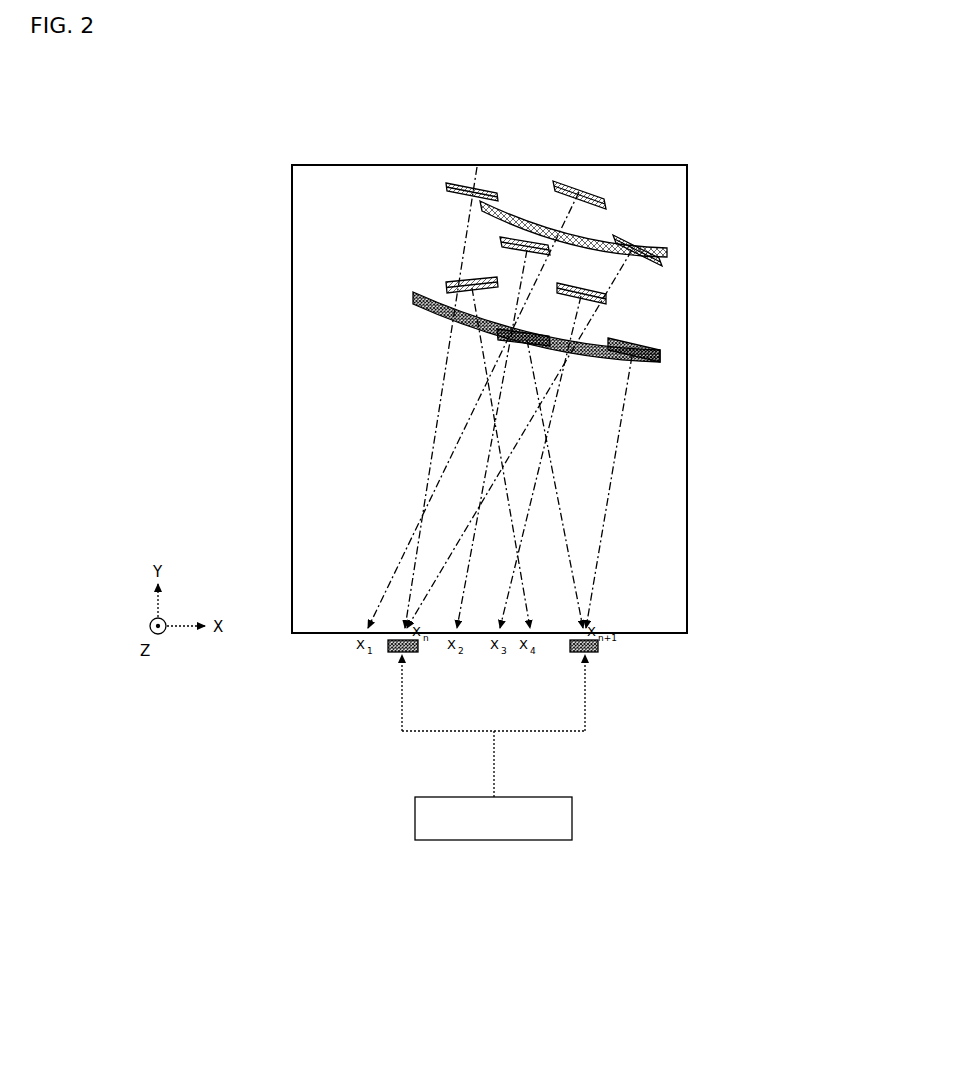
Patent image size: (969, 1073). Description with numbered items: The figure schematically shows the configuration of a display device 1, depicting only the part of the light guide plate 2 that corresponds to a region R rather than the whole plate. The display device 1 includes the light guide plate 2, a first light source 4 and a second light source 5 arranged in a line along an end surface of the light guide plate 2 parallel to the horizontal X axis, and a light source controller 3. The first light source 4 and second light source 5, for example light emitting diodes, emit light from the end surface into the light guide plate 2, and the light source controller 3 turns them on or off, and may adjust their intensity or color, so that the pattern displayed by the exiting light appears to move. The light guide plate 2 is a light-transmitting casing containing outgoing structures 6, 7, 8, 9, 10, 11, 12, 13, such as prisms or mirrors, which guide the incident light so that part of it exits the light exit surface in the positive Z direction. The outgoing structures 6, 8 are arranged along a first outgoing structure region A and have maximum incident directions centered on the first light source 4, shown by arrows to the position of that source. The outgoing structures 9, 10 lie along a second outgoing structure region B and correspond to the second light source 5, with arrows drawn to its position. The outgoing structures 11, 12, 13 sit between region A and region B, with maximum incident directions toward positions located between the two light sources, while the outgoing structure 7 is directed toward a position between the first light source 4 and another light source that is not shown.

The display device 1 is at (256, 137).
The light guide plate 2 is at (687, 303).
The light source controller 3 is at (523, 841).
The first light source 4 is at (412, 654).
The second light source 5 is at (576, 654).
The outgoing structure 6 is at (482, 185).
The outgoing structure 7 is at (572, 190).
The outgoing structure 8 is at (617, 233).
The outgoing structure 9 is at (535, 328).
The outgoing structure 10 is at (622, 334).
The outgoing structure 11 is at (448, 280).
The outgoing structure 12 is at (503, 249).
The outgoing structure 13 is at (587, 285).
The first outgoing structure region A is at (655, 243).
The second outgoing structure region B is at (423, 310).
The region R is at (308, 382).